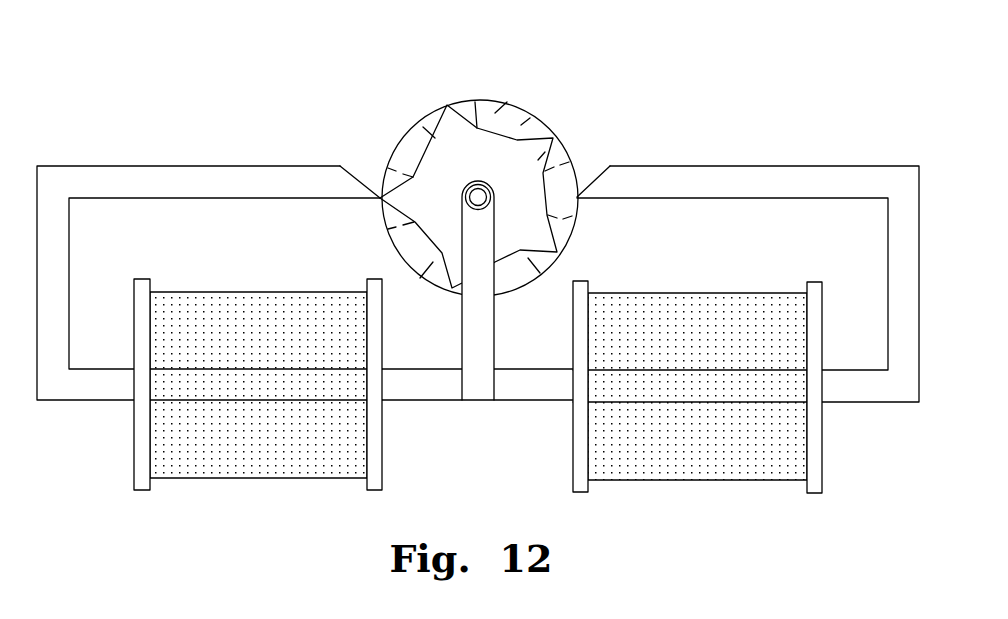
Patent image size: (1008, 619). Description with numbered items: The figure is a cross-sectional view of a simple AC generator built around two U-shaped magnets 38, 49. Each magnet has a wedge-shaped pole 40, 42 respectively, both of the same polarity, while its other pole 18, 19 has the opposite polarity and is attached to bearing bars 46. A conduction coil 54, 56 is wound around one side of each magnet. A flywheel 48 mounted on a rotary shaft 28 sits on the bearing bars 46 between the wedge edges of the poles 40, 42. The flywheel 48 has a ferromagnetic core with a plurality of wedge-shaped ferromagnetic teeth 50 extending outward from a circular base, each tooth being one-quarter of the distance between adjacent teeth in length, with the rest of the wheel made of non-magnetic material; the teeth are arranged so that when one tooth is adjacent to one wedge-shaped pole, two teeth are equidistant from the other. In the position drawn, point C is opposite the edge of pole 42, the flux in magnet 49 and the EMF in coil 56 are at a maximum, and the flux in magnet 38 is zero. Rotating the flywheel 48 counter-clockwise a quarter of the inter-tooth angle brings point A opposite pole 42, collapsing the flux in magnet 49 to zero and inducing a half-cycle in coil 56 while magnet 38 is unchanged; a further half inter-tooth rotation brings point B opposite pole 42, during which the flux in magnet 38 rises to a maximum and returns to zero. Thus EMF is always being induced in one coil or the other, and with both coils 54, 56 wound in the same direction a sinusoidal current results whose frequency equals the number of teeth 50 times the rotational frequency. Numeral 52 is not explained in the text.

The pole 18 is at (563, 384).
The pole 19 is at (398, 384).
The rotary shaft 28 is at (466, 197).
The U-shaped magnet 38 is at (819, 171).
The wedge-shaped pole 40 is at (609, 167).
The wedge-shaped pole 42 is at (352, 178).
The bearing bars 46 is at (477, 341).
The flywheel 48 is at (560, 106).
The U-shaped magnet 49 is at (118, 177).
The wedge-shaped ferromagnetic teeth 50 is at (546, 152).
The ratchet tooth 52 is at (498, 110).
The conduction coil 54 is at (818, 459).
The conduction coil 56 is at (137, 463).
The point A is at (388, 176).
The point B is at (423, 127).
The point C is at (379, 201).